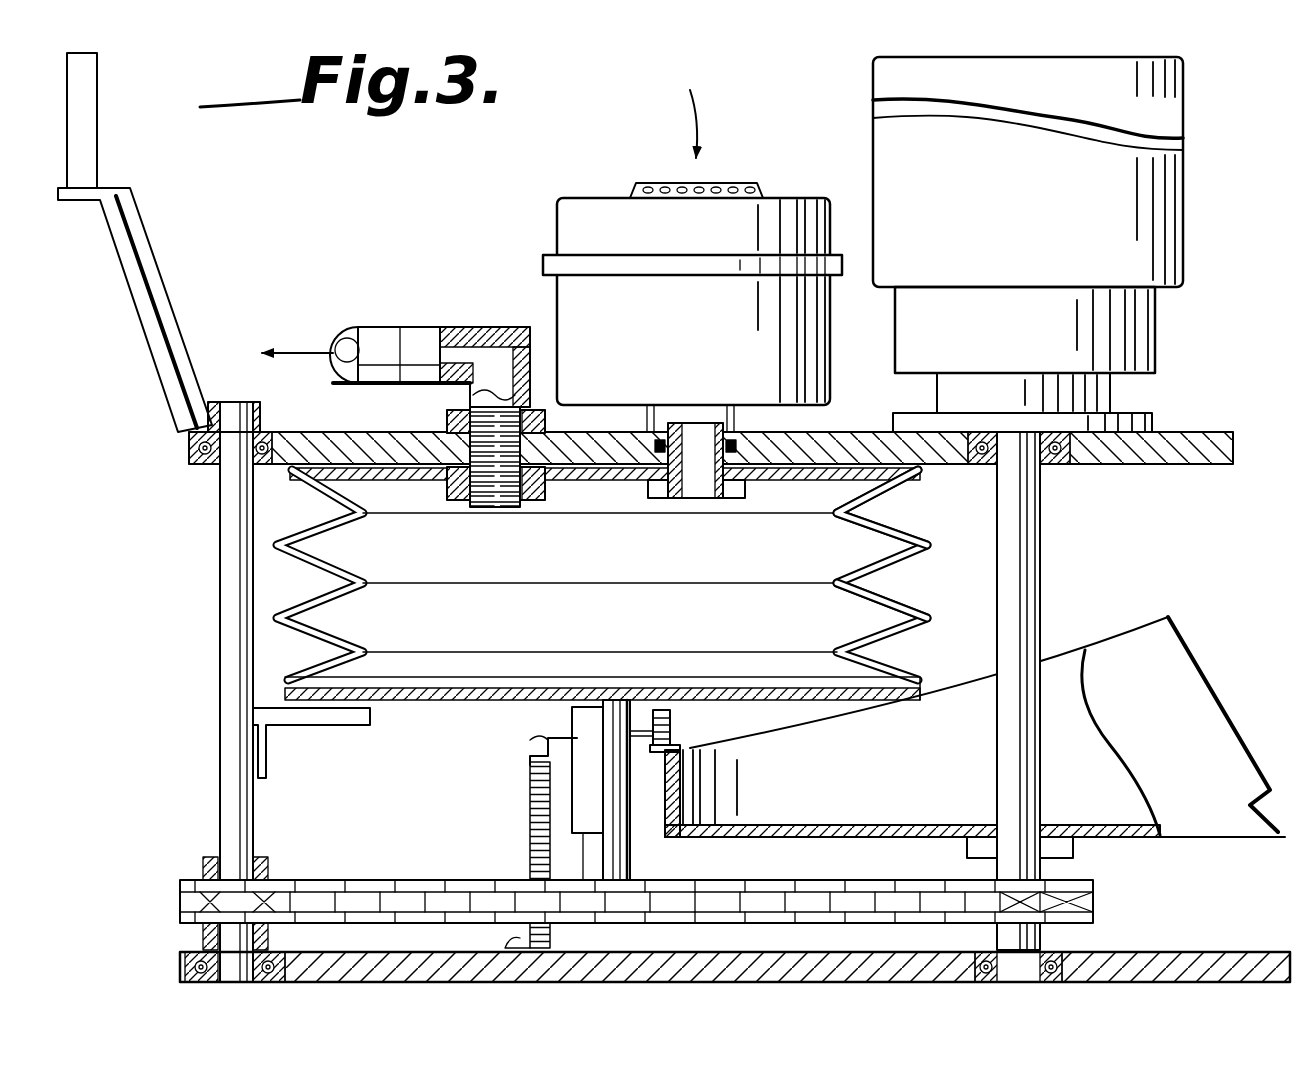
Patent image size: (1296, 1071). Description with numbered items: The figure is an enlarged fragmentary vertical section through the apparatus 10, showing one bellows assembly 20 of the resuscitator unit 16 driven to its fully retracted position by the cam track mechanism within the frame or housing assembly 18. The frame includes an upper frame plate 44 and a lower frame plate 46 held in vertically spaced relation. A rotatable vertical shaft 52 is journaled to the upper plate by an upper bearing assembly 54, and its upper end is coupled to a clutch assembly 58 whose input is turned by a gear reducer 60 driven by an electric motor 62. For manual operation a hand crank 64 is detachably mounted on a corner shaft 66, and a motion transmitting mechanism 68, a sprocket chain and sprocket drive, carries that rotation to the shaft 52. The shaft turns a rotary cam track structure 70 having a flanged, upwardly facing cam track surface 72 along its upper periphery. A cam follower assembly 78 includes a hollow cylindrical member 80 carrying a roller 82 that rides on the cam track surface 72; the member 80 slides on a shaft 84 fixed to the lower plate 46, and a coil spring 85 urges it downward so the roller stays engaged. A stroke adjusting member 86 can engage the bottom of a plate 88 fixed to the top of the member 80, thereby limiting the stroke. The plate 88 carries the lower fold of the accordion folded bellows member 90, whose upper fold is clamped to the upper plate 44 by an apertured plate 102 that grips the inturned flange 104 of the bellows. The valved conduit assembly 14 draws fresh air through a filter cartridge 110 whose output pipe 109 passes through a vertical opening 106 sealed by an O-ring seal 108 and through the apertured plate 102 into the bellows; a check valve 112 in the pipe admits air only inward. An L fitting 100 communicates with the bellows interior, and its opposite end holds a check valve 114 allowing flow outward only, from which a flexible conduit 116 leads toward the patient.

The apparatus 10 is at (163, 468).
The valved conduit assembly 14 is at (395, 324).
The resuscitator unit 16 is at (290, 535).
The frame or housing assembly 18 is at (1197, 430).
The bellows assembly 20 is at (985, 522).
The upper frame plate 44 is at (385, 432).
The lower frame plate 46 is at (735, 940).
The shaft 52 is at (1043, 607).
The upper bearing assembly 54 is at (1068, 458).
The clutch assembly 58 is at (940, 395).
The gear reducer 60 is at (1135, 345).
The electric motor 62 is at (1160, 243).
The hand crank 64 is at (95, 160).
The shaft 66 is at (222, 679).
The motion transmitting mechanism 68 is at (465, 852).
The rotary cam track structure 70 is at (665, 800).
The cam track surface 72 is at (678, 752).
The cam follower assembly 78 is at (570, 716).
The hollow cylindrical member 80 is at (600, 806).
The roller 82 is at (662, 745).
The shaft 84 is at (577, 856).
The coil spring 85 is at (530, 781).
The stroke adjusting member 86 is at (355, 715).
The plate 88 is at (808, 702).
The bellows member 90 is at (885, 600).
The L fitting 100 is at (508, 305).
The apertured plate 102 is at (408, 487).
The inturned flange 104 is at (290, 458).
The vertical opening 106 is at (738, 412).
The O-ring seal 108 is at (650, 422).
The output pipe 109 is at (653, 475).
The filter cartridge 110 is at (572, 222).
The check valve 112 is at (700, 490).
The check valve 114 is at (378, 386).
The flexible conduit 116 is at (345, 332).